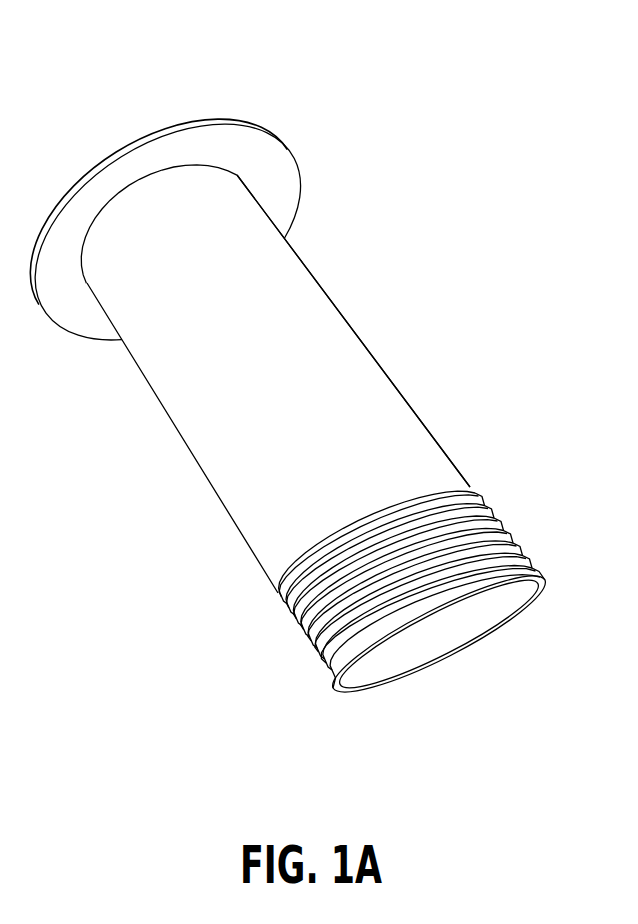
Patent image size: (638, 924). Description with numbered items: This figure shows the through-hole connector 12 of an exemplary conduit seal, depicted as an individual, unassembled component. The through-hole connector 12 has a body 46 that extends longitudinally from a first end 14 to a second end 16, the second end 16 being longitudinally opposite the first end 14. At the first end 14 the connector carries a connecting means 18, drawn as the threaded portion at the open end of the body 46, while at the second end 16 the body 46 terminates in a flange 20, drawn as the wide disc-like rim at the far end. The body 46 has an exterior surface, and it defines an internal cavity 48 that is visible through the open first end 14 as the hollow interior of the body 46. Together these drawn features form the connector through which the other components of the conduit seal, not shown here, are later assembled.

The through-hole connector 12 is at (313, 274).
The first end 14 is at (512, 522).
The second end 16 is at (234, 96).
The connecting means 18 is at (292, 644).
The flange 20 is at (120, 153).
The body 46 is at (374, 359).
The internal cavity 48 is at (454, 679).